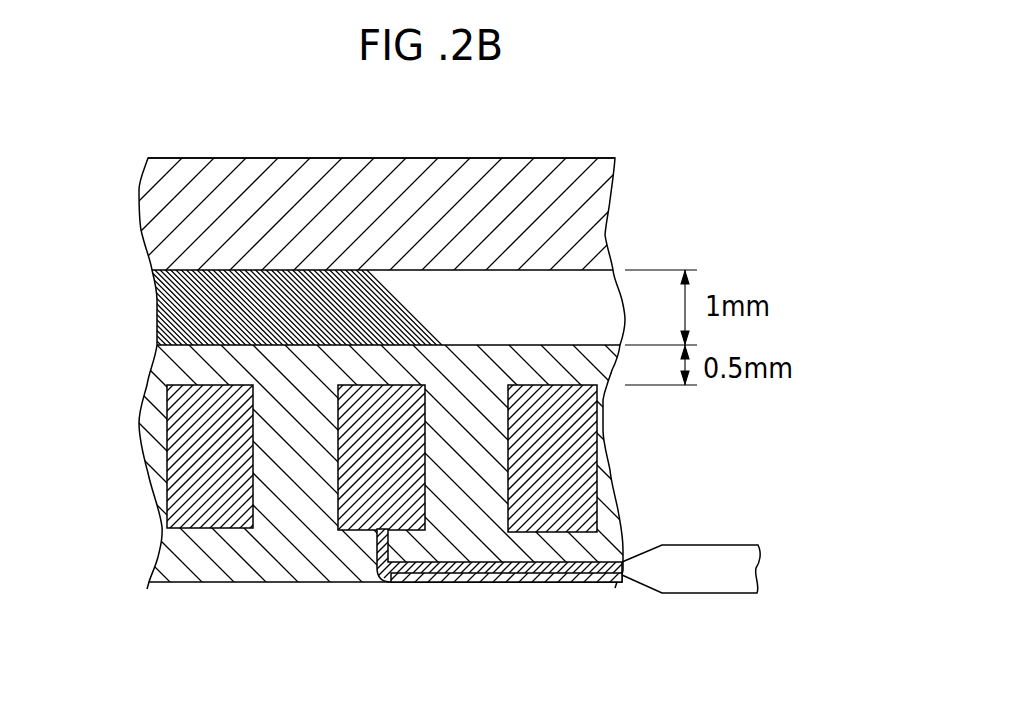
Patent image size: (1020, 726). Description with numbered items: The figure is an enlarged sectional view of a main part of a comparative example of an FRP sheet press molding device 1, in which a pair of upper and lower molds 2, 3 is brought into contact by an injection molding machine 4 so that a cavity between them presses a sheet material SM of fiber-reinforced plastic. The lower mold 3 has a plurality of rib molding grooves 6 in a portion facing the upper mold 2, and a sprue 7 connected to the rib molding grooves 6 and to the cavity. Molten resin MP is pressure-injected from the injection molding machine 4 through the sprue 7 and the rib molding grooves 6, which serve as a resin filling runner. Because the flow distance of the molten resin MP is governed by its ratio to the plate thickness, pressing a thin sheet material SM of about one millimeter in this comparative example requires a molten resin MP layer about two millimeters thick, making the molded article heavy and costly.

The FRP sheet press molding device 1 is at (680, 144).
The upper mold 2 is at (150, 210).
The sheet material SM is at (160, 313).
The rib molding grooves 6 is at (170, 462).
The lower mold 3 is at (160, 557).
The sprue 7 is at (475, 582).
The molten resin MP is at (558, 582).
The injection molding machine 4 is at (730, 553).